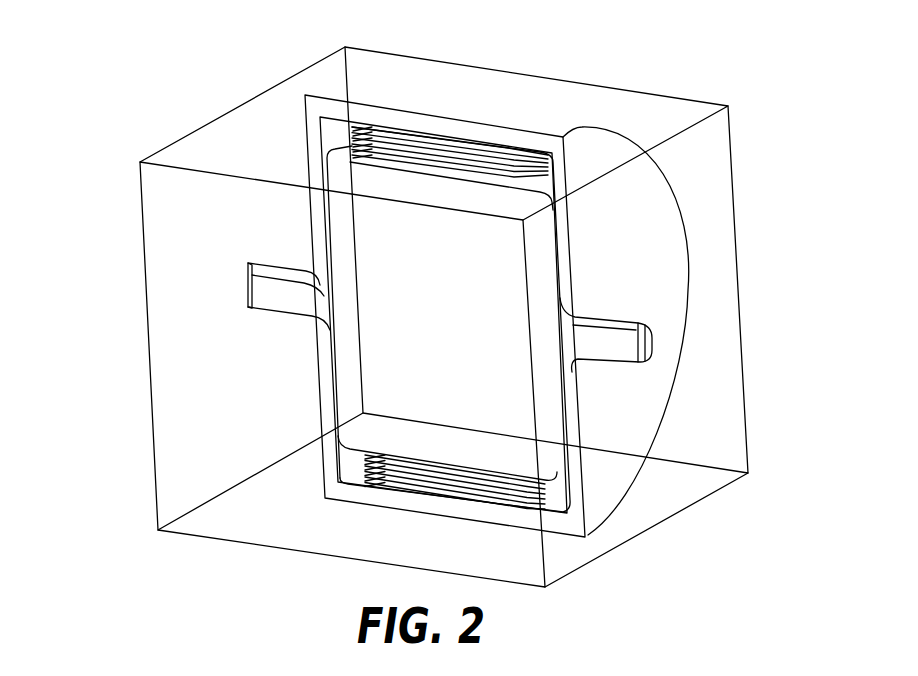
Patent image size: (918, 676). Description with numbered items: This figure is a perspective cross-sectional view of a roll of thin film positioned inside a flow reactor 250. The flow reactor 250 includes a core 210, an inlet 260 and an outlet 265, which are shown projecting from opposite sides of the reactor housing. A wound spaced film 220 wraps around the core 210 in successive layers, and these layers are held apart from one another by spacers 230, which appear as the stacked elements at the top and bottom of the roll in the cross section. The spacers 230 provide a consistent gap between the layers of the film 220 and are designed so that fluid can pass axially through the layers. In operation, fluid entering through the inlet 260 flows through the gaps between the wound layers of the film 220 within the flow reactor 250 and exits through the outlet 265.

The core 210 is at (393, 348).
The wound spaced film 220 is at (346, 127).
The spacers 230 is at (510, 147).
The flow reactor 250 is at (340, 242).
The inlet 260 is at (650, 350).
The outlet 265 is at (248, 295).